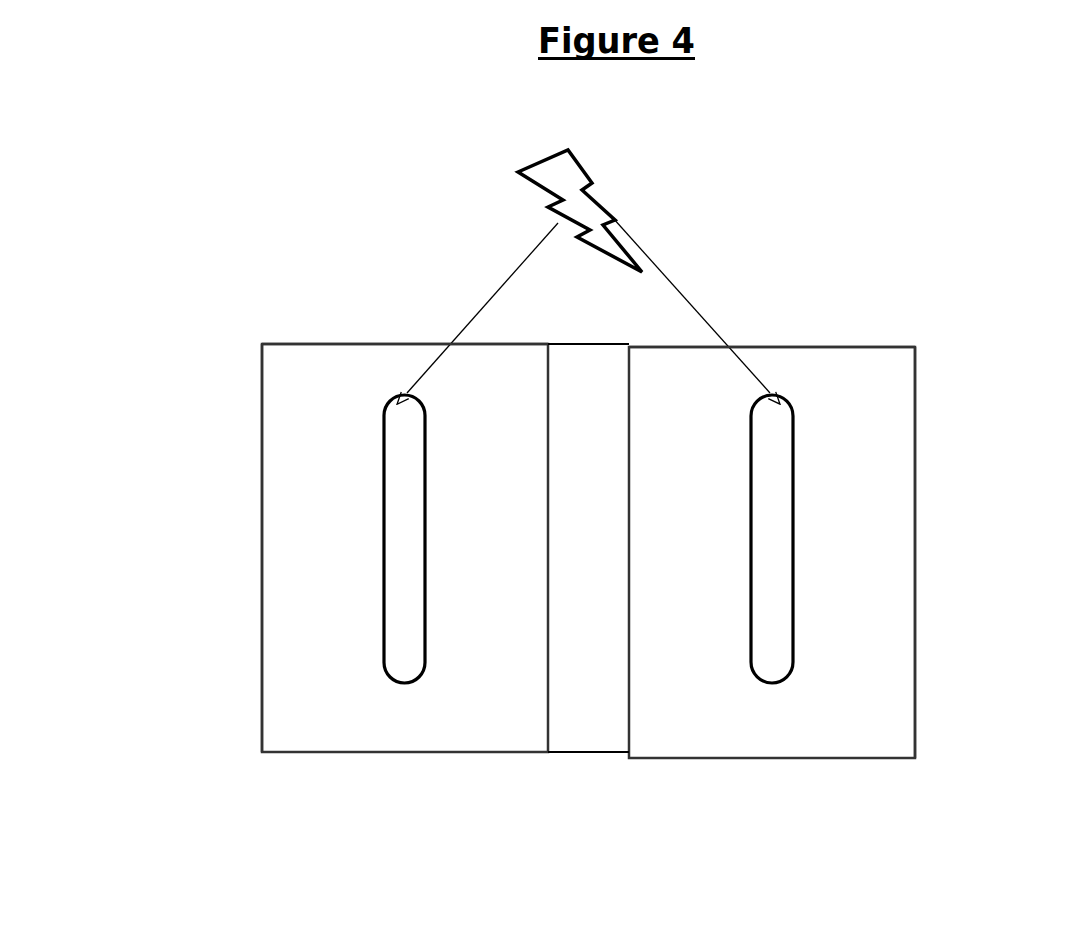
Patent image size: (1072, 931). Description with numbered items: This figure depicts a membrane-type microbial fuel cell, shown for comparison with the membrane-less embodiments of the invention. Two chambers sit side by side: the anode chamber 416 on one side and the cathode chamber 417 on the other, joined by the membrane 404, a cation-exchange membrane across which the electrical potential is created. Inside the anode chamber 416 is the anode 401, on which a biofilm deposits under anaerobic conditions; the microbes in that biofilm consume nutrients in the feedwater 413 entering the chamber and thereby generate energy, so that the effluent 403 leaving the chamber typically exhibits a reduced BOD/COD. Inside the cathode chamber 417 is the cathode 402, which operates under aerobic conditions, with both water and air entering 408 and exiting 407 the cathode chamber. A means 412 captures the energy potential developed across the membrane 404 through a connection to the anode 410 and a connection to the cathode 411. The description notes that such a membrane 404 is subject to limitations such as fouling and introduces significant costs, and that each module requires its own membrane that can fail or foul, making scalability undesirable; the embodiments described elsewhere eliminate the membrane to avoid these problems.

The anode 401 is at (414, 539).
The cathode 402 is at (783, 539).
The effluent 403 is at (182, 850).
The membrane 404 is at (588, 548).
The exiting 407 is at (985, 842).
The entering 408 is at (832, 343).
The connection to the anode 410 is at (482, 308).
The connection to the cathode 411 is at (691, 305).
The means 412 is at (580, 196).
The feedwater 413 is at (403, 342).
The anode chamber 416 is at (356, 590).
The cathode chamber 417 is at (843, 558).